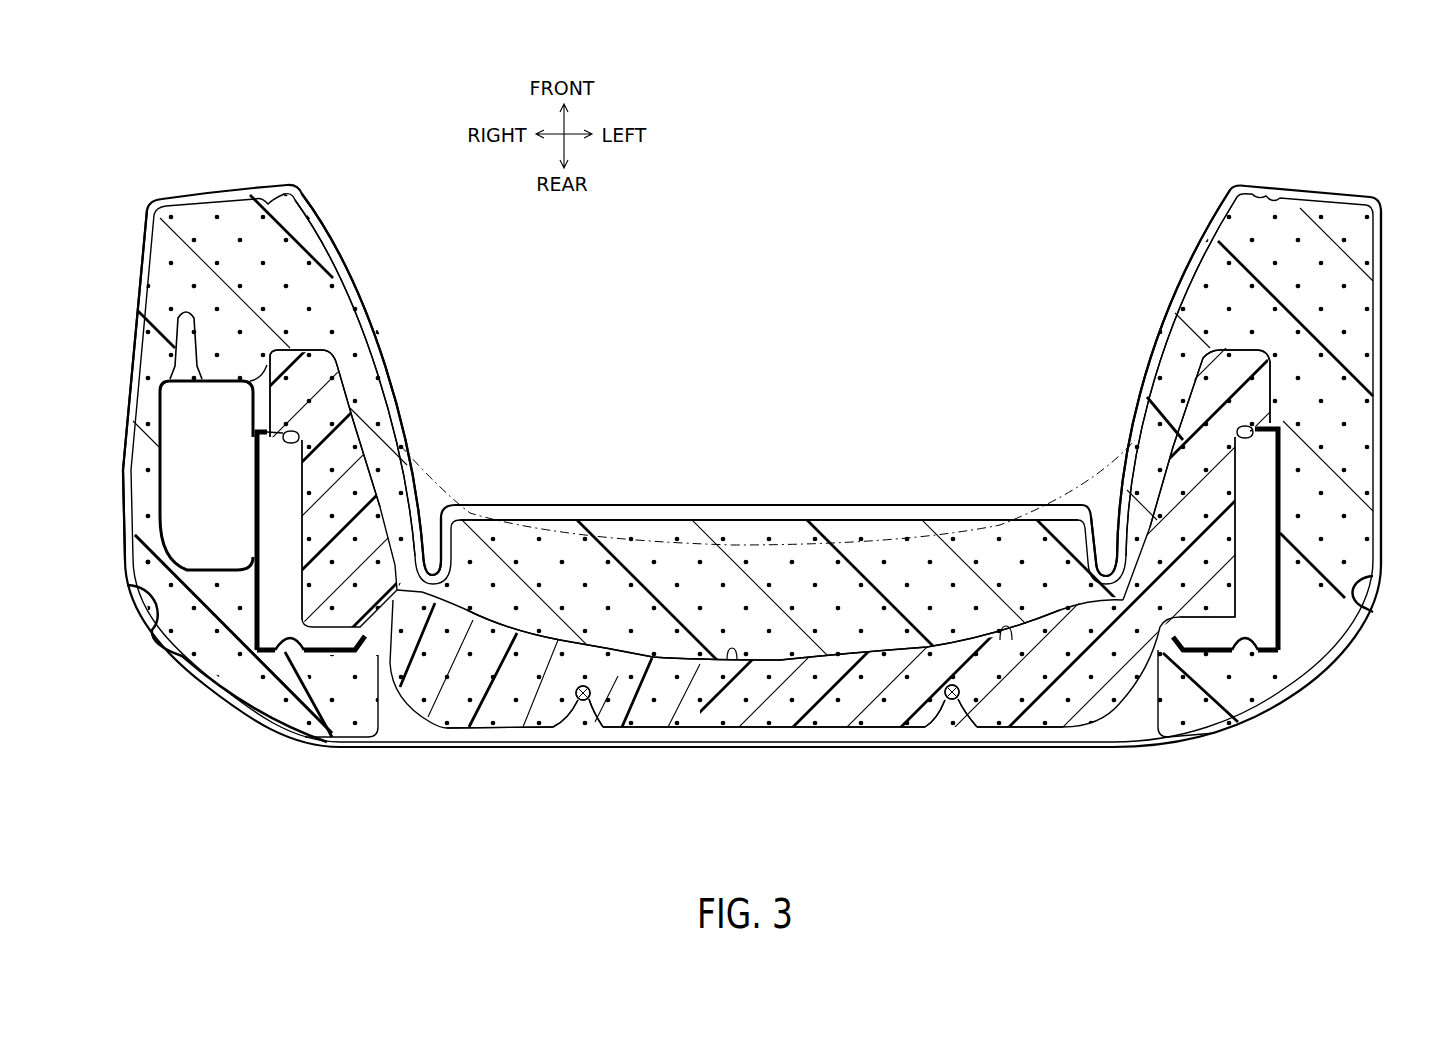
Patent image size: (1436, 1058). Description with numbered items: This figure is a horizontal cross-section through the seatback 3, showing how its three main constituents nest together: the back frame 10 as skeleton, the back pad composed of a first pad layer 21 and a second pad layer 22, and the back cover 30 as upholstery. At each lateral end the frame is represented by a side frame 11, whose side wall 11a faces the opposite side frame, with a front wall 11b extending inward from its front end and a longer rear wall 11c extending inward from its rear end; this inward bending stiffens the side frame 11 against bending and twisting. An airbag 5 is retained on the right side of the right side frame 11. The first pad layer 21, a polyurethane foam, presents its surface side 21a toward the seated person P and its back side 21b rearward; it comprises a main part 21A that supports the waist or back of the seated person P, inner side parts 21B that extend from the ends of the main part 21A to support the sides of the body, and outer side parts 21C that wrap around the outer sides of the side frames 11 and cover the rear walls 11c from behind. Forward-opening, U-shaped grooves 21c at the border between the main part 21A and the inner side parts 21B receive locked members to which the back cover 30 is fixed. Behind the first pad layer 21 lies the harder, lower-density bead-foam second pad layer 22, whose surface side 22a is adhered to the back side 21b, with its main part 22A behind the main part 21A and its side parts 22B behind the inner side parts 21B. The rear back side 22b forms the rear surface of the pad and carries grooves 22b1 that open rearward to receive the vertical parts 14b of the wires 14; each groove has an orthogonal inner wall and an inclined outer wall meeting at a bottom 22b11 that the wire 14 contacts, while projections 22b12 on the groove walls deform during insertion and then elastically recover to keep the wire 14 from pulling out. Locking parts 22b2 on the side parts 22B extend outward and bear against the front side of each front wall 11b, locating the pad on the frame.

The seatback 3 is at (776, 307).
The airbag 5 is at (182, 372).
The back frame 10 is at (233, 634).
The side frame 11 is at (275, 635).
The side wall 11a is at (255, 583).
The front wall 11b is at (252, 437).
The rear wall 11c is at (330, 653).
The wire 14 is at (767, 692).
The vertical part 14b is at (573, 707).
The first pad layer 21 is at (845, 533).
The main part 21A is at (667, 517).
The surface side 21a is at (721, 520).
The inner side part 21B is at (330, 260).
The outer side part 21C is at (138, 285).
The back side 21b is at (1010, 607).
The groove 21c is at (437, 543).
The second pad layer 22 is at (503, 630).
The main part 22A is at (773, 660).
The surface side 22a is at (731, 663).
The side part 22B is at (343, 396).
The back side 22b is at (490, 730).
The groove 22b1 is at (563, 723).
The bottom 22b11 is at (588, 697).
The projection 22b12 is at (580, 710).
The locking part 22b2 is at (300, 434).
The back cover 30 is at (617, 503).
The seated person P is at (478, 500).